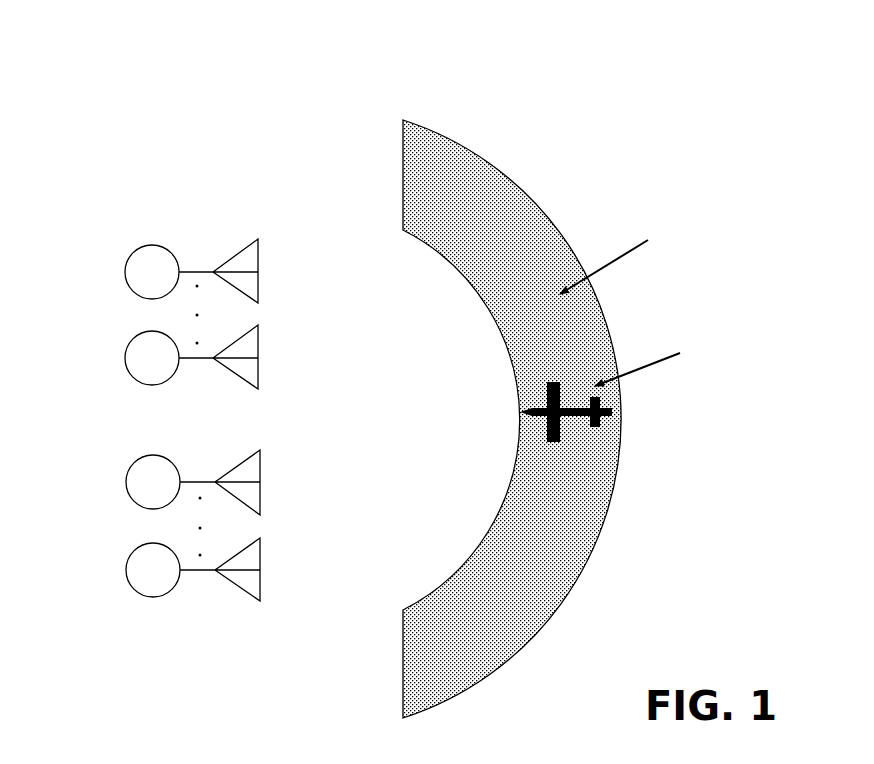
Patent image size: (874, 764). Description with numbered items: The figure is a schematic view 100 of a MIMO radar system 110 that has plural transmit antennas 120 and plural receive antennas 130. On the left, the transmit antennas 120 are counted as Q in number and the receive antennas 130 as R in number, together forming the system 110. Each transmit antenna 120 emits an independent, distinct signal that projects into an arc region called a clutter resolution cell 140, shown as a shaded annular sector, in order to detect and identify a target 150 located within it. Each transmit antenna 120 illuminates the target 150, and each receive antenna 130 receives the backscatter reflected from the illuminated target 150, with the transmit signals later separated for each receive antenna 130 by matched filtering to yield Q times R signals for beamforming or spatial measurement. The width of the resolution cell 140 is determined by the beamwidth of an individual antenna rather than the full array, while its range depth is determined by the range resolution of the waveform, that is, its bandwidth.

The schematic view 100 is at (182, 92).
The MIMO radar system 110 is at (104, 232).
The transmit antennas 120 is at (303, 235).
The receive antennas 130 is at (303, 443).
The clutter resolution cell 140 is at (512, 636).
The target 150 is at (600, 427).